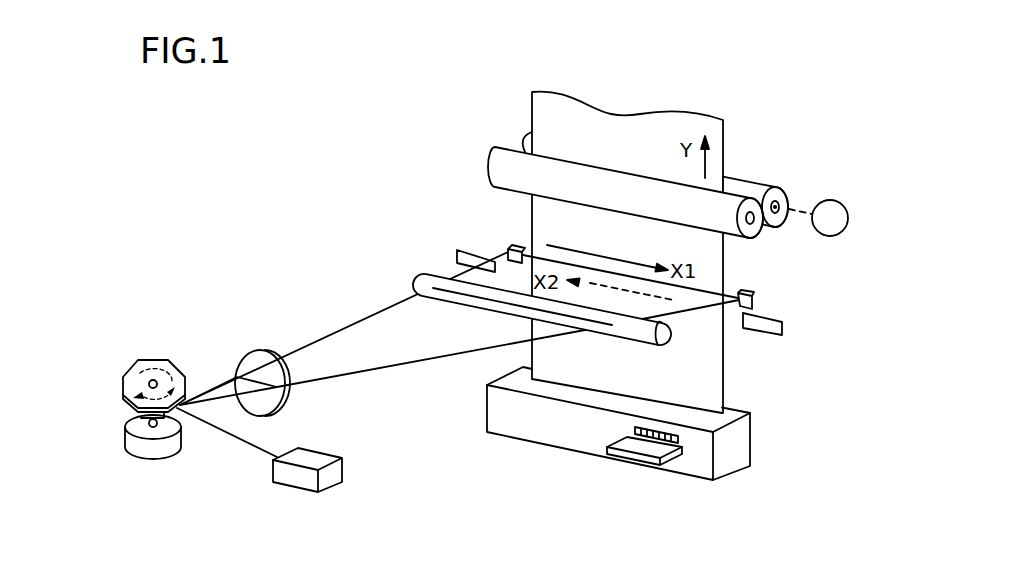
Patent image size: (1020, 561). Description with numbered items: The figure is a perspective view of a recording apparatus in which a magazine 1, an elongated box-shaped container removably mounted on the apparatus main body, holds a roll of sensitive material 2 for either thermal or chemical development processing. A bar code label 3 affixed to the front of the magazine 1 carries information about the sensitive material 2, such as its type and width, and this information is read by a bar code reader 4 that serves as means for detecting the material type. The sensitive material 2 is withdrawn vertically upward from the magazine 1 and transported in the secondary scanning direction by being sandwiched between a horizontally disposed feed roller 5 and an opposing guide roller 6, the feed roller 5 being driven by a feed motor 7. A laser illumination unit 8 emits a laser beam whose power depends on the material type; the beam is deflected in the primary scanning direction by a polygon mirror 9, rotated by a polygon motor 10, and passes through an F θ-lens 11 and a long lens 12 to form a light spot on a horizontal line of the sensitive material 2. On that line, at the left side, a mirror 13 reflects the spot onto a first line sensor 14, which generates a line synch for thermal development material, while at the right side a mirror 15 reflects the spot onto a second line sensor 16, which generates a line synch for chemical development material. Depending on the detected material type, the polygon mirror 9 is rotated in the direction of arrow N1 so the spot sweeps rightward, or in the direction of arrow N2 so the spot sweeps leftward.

The magazine 1 is at (745, 455).
The sensitive material 2 is at (717, 380).
The bar code label 3 is at (635, 430).
The bar code reader 4 is at (632, 460).
The feed roller 5 is at (760, 188).
The guide roller 6 is at (723, 203).
The feed motor 7 is at (841, 201).
The laser illumination unit 8 is at (342, 472).
The polygon mirror 9 is at (152, 360).
The polygon motor 10 is at (153, 453).
The F θ-lens 11 is at (258, 350).
The long lens 12 is at (418, 283).
The mirror 13 is at (508, 246).
The first line sensor 14 is at (457, 255).
The mirror 15 is at (754, 293).
The second line sensor 16 is at (783, 327).
The arrow indicating rotation direction of polygon mirror N1 is at (182, 377).
The arrow indicating rotation direction of polygon mirror N2 is at (122, 383).